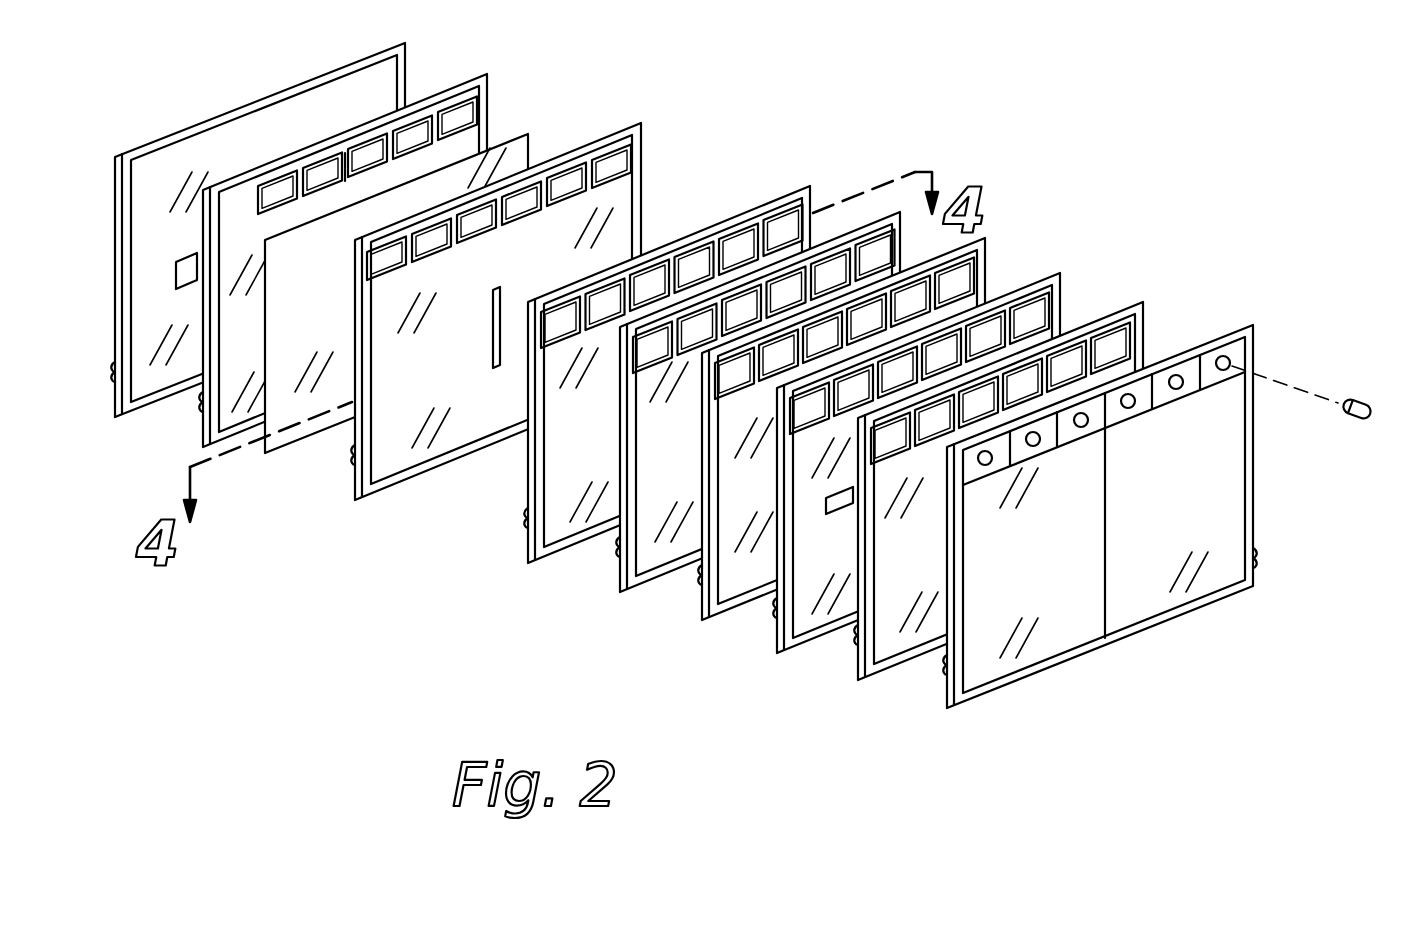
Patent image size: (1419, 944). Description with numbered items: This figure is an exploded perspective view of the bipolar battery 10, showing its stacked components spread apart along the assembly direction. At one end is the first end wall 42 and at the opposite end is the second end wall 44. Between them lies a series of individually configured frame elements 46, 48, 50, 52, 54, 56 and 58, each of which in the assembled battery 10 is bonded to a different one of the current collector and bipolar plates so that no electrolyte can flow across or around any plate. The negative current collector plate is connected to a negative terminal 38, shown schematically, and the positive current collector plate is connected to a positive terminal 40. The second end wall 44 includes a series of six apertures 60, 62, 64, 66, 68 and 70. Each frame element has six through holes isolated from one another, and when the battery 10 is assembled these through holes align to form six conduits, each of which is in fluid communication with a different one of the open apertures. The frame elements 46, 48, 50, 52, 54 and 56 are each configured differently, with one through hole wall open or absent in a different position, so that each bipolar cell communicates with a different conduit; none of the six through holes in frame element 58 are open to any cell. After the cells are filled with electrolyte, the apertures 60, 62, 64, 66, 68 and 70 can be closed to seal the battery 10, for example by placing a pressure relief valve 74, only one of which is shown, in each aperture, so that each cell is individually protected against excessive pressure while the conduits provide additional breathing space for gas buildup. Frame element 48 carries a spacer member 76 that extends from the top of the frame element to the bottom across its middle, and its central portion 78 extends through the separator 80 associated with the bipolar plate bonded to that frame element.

The bipolar battery 10 is at (343, 617).
The negative terminal 38 is at (276, 242).
The positive terminal 40 is at (833, 516).
The first end wall 42 is at (150, 199).
The second end wall 44 is at (1137, 516).
The frame element 46 is at (200, 432).
The frame element 48 is at (466, 338).
The frame element 50 is at (525, 553).
The frame element 52 is at (617, 586).
The frame element 54 is at (706, 616).
The frame element 56 is at (782, 651).
The frame element 58 is at (967, 508).
The aperture 60 is at (985, 465).
The aperture 62 is at (1033, 446).
The aperture 64 is at (1081, 427).
The aperture 66 is at (1128, 408).
The aperture 68 is at (1176, 389).
The aperture 70 is at (1223, 370).
The pressure relief valve 74 is at (1359, 402).
The spacer member 76 is at (345, 200).
The central portion 78 is at (490, 346).
The separator 80 is at (525, 148).